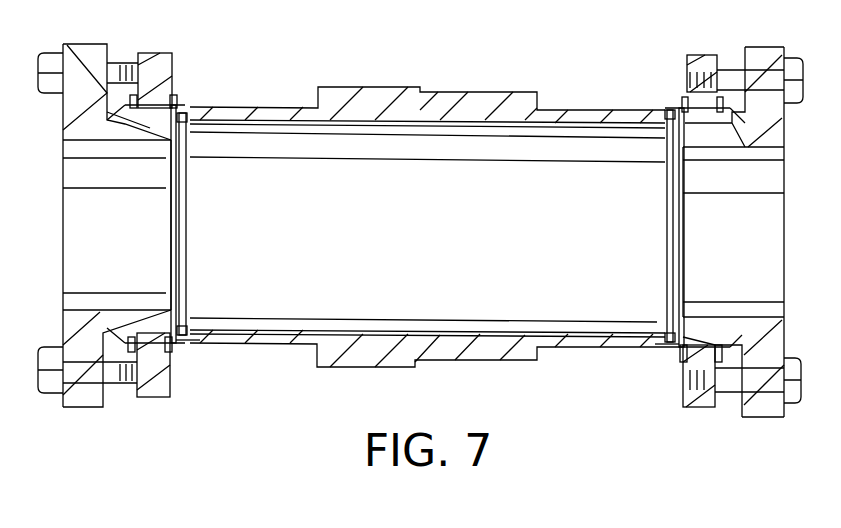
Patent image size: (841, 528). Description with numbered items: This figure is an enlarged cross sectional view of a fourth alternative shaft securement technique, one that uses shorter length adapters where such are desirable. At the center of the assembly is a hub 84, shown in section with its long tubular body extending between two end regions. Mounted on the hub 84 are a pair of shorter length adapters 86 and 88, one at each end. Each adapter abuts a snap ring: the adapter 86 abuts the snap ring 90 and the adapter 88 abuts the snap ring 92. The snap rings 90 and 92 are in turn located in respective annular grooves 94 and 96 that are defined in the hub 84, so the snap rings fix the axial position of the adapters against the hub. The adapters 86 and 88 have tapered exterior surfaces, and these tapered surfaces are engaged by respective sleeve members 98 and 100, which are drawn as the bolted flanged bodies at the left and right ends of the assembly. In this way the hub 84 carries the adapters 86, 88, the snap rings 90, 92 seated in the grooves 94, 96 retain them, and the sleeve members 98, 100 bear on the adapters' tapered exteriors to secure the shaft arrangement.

The hub 84 is at (578, 108).
The adapter 86 is at (134, 293).
The adapter 88 is at (712, 147).
The snap ring 90 is at (190, 325).
The snap ring 92 is at (662, 333).
The annular groove 94 is at (193, 342).
The annular groove 96 is at (645, 352).
The sleeve member 98 is at (63, 110).
The sleeve member 100 is at (787, 132).